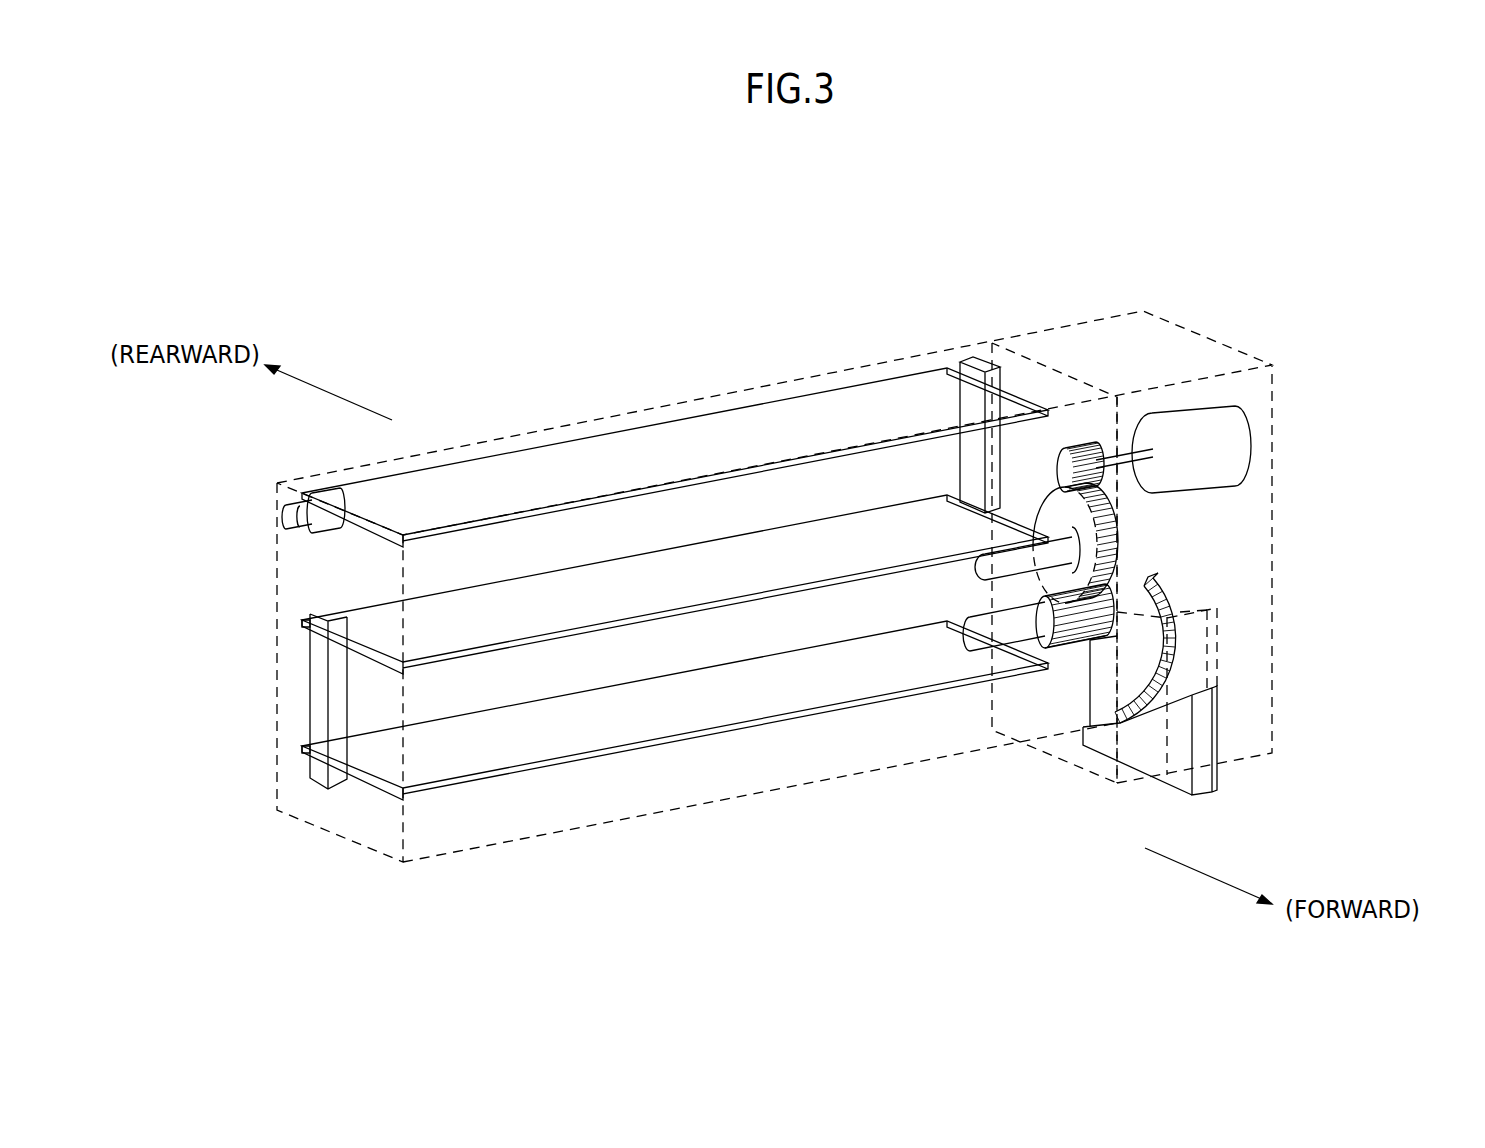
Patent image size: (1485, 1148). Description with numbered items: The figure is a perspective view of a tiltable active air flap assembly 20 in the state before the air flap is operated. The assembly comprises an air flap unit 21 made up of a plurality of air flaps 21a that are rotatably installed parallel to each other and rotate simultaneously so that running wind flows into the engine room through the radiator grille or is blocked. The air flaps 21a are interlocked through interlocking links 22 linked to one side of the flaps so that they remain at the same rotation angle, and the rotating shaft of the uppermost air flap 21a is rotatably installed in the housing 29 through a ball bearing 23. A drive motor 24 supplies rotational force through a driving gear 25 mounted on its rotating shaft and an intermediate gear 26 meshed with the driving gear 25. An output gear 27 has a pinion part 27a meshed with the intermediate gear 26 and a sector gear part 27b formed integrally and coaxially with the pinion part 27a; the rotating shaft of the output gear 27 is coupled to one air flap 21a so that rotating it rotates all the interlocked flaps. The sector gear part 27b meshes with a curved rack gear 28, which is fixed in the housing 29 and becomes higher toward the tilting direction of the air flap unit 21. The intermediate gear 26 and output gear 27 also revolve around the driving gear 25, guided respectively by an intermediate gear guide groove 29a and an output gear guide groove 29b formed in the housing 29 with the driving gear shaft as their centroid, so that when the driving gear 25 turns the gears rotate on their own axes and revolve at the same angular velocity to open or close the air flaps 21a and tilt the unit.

The tiltable active air flap assembly 20 is at (1135, 187).
The air flap unit 21 is at (691, 622).
The air flap 21a is at (605, 463).
The interlocking link 22 is at (318, 705).
The ball bearing 23 is at (290, 521).
The drive motor 24 is at (1210, 425).
The driving gear 25 is at (1080, 448).
The intermediate gear 26 is at (1092, 562).
The output gear 27 is at (1071, 742).
The pinion part 27a is at (1060, 617).
The sector gear part 27b is at (1107, 707).
The curved rack gear 28 is at (1207, 777).
The housing 29 is at (1197, 332).
The intermediate gear guide groove 29a is at (1108, 522).
The output gear guide groove 29b is at (1110, 594).